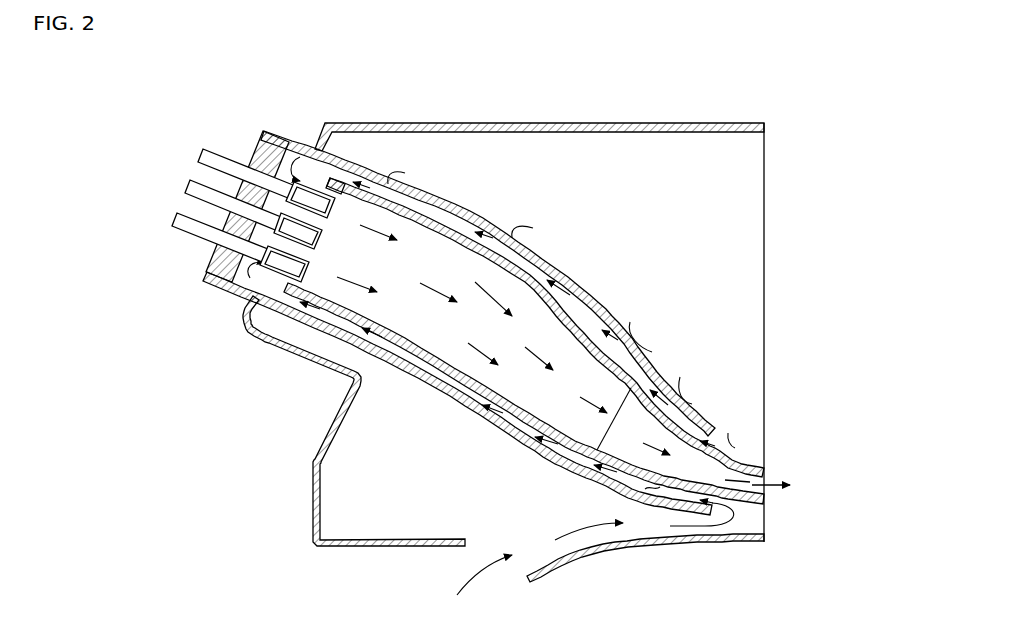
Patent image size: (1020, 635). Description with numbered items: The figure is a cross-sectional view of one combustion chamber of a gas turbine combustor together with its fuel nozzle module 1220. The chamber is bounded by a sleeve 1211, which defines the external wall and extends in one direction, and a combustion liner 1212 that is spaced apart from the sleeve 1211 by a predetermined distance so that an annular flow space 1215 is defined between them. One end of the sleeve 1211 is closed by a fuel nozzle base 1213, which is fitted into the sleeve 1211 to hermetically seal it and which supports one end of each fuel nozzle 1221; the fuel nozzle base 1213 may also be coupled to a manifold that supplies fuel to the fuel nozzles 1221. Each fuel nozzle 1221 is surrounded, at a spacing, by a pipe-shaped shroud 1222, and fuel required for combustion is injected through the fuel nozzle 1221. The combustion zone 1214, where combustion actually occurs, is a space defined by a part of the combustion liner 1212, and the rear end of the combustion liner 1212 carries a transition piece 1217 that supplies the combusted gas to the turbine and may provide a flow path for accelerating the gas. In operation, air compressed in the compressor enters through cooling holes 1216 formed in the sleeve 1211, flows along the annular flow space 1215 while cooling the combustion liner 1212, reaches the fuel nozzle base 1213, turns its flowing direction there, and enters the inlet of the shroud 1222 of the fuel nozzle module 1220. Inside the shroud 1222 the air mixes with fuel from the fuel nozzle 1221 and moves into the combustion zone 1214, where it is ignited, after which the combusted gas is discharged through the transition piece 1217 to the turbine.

The fuel nozzle module 1220 is at (230, 166).
The fuel nozzle 1221 is at (215, 158).
The fuel nozzle base 1213 is at (272, 153).
The shroud 1222 is at (322, 183).
The combustion zone 1214 is at (418, 240).
The sleeve 1211 is at (447, 398).
The combustion liner 1212 is at (518, 418).
The annular flow space 1215 is at (648, 484).
The cooling holes 1216 is at (323, 323).
The transition piece 1217 is at (748, 465).